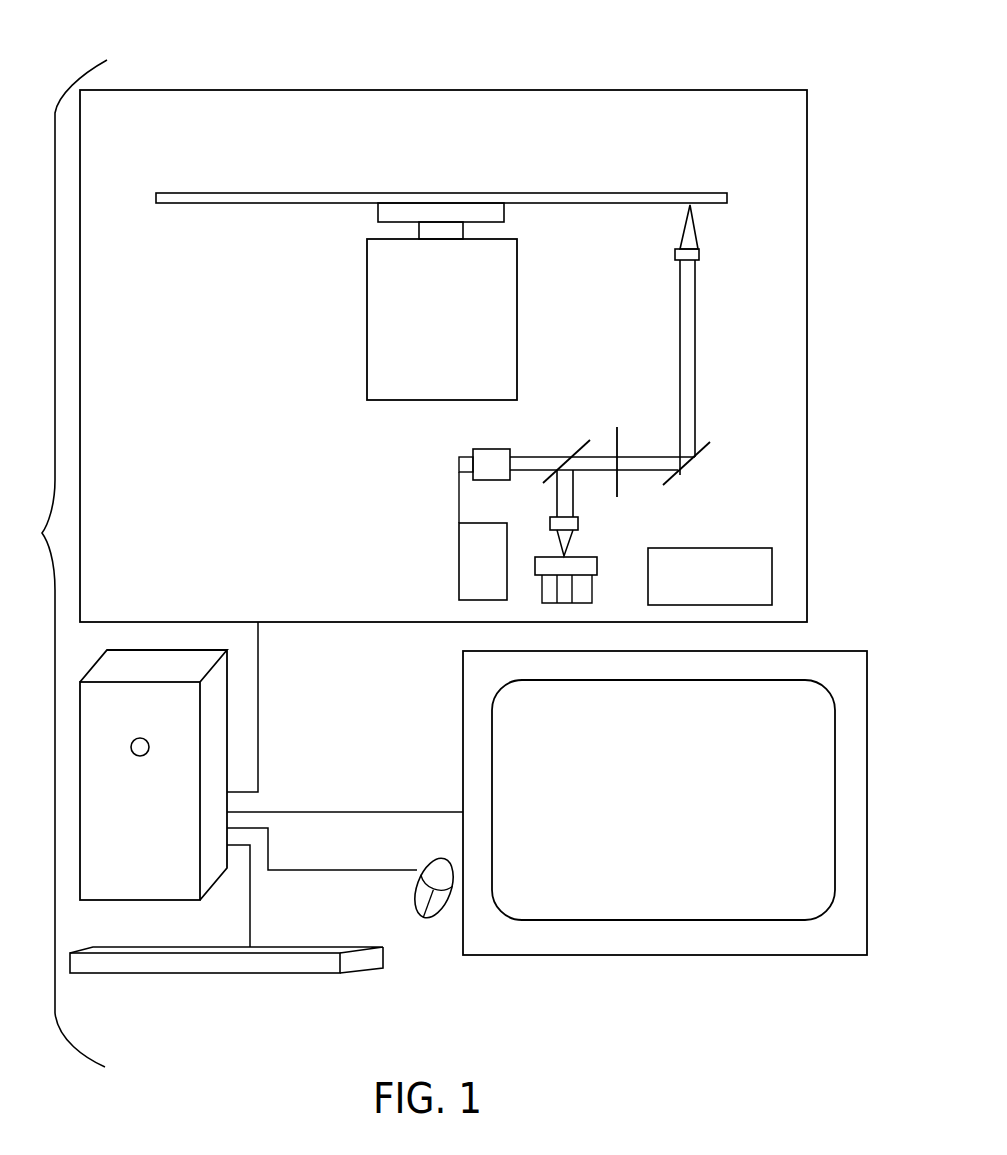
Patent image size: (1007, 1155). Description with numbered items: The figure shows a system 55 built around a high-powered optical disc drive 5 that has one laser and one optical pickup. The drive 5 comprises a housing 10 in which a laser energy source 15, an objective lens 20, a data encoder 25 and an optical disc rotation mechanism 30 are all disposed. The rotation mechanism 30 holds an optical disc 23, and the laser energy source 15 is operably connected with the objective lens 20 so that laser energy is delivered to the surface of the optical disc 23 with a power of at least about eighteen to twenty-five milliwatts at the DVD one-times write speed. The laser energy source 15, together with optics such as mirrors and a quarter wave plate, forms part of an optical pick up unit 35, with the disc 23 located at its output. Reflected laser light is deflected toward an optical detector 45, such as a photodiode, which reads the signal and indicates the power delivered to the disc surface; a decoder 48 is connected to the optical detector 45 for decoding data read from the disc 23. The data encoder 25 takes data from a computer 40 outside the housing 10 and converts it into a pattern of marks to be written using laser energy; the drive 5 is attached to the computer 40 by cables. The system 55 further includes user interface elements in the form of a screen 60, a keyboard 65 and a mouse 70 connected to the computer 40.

The optical disc drive 5 is at (820, 61).
The housing 10 is at (808, 368).
The laser energy source 15 is at (495, 467).
The objective lens 20 is at (675, 257).
The optical disc 23 is at (258, 198).
The data encoder 25 is at (483, 561).
The optical disc rotation mechanism 30 is at (442, 301).
The optical pick up unit 35 is at (735, 277).
The computer 40 is at (103, 870).
The optical detector 45 is at (592, 562).
The decoder 48 is at (710, 576).
The system 55 is at (62, 563).
The screen 60 is at (675, 945).
The keyboard 65 is at (202, 974).
The mouse 70 is at (413, 889).